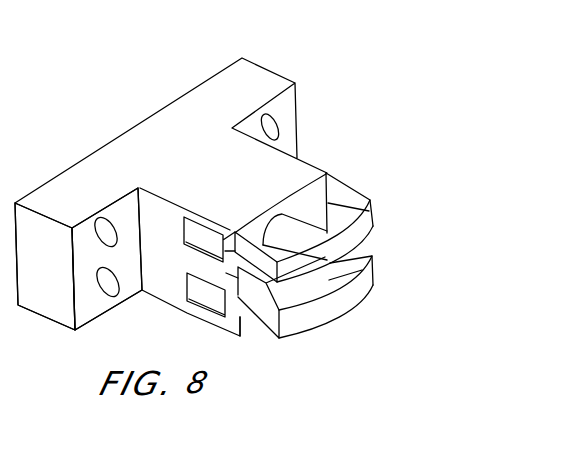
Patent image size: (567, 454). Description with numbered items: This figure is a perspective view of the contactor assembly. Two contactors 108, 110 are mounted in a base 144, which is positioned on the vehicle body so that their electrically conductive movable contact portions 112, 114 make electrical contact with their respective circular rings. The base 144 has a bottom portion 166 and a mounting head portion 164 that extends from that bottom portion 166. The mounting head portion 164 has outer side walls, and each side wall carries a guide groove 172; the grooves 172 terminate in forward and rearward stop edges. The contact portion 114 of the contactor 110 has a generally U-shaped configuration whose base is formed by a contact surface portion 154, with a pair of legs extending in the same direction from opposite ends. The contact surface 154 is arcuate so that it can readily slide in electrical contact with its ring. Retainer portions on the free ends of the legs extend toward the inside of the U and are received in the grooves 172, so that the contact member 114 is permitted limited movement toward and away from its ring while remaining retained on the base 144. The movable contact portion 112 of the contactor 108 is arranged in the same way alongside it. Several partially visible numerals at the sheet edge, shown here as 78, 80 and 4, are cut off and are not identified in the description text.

The contactor 108 is at (283, 253).
The contactor 110 is at (245, 316).
The movable contact portion 112 is at (352, 240).
The movable contact portion 114 is at (343, 316).
The base 144 is at (180, 132).
The contact surface portion 154 is at (303, 323).
The mounting head portion 164 is at (152, 278).
The bottom portion 166 is at (43, 303).
The guide groove 172 is at (198, 300).
The partial numeral (cut off) 78 is at (7, 107).
The partial numeral (cut off) 80 is at (10, 144).
The partial numeral (cut off) 4 is at (3, 86).